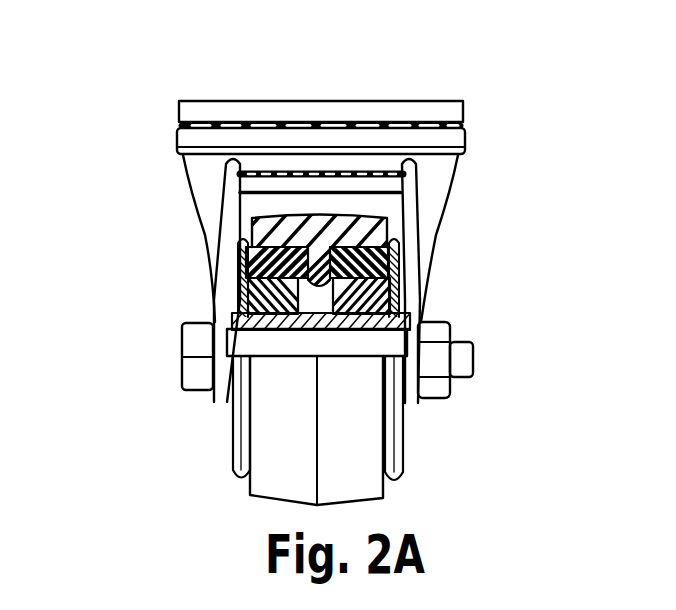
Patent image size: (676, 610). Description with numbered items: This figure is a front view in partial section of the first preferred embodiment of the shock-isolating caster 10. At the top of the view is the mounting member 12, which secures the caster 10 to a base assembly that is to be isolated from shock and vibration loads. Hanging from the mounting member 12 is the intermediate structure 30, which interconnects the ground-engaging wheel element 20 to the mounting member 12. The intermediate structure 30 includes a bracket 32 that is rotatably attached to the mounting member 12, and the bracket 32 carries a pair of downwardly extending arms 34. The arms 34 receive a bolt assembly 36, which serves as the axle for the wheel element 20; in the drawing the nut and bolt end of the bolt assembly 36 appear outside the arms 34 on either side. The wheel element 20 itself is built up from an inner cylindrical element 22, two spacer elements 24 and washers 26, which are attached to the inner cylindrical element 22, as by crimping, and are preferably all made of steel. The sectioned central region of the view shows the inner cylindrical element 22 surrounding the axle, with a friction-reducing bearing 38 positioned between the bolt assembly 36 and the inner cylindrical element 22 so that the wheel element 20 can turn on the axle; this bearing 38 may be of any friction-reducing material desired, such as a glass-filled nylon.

The shock-isolating caster 10 is at (434, 398).
The mounting member 12 is at (404, 101).
The ground-engaging wheel element 20 is at (260, 497).
The inner cylindrical element 22 is at (385, 293).
The spacer elements 24 is at (353, 314).
The washers 26 is at (233, 433).
The intermediate structure 30 is at (187, 180).
The bracket 32 is at (420, 202).
The arms 34 is at (213, 250).
The bolt assembly 36 is at (182, 338).
The friction-reducing bearing 38 is at (235, 322).